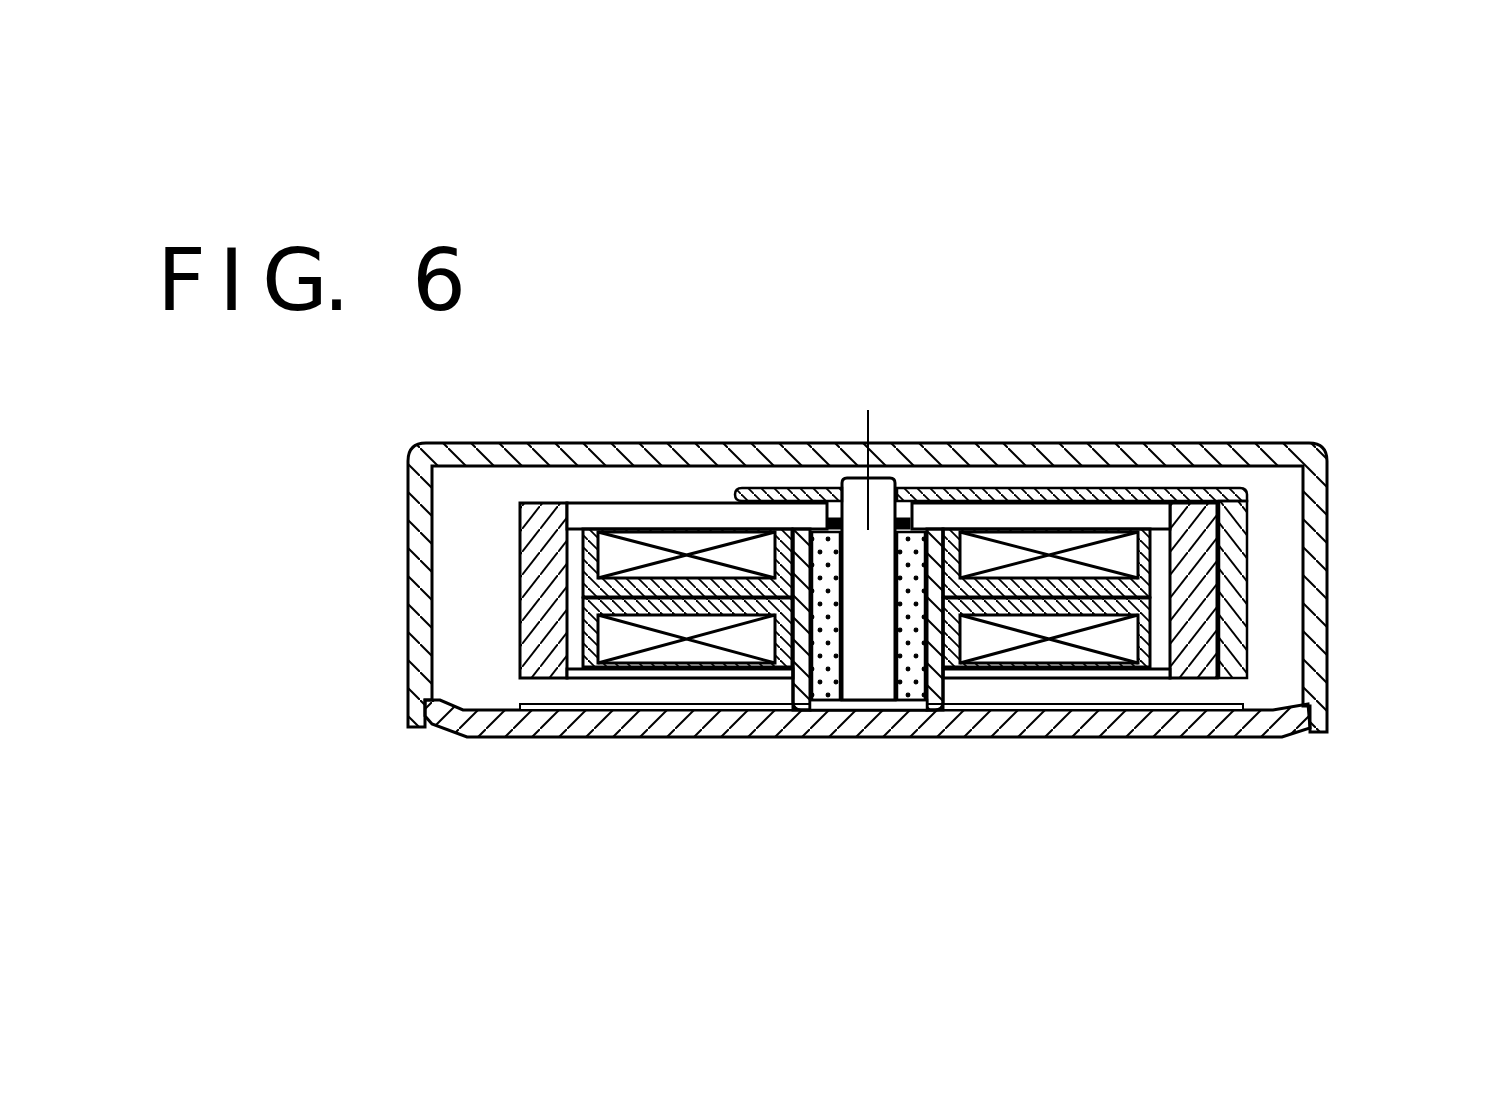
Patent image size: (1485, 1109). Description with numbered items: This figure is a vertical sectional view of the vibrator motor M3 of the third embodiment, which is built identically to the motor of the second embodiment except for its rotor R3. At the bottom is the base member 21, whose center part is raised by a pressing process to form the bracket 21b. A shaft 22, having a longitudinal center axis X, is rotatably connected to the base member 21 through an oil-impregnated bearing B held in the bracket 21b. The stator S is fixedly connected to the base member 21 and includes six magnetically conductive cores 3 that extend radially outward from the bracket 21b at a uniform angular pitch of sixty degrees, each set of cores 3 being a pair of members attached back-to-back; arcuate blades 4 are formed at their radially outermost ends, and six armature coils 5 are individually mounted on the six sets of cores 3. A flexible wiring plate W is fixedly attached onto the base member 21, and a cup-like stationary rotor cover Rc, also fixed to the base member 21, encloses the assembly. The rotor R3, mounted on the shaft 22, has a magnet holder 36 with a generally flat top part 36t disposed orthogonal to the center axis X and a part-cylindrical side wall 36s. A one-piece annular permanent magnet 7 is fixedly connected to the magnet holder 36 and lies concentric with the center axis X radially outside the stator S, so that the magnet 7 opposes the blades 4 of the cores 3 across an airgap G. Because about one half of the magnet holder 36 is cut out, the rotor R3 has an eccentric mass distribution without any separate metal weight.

The vibrator motor M3 is at (1113, 313).
The stationary rotor cover Rc is at (1248, 457).
The rotor R3 is at (1097, 584).
The magnet holder 36 is at (1097, 509).
The top part 36t is at (795, 487).
The side wall 36s is at (1230, 577).
The center axis X is at (870, 423).
The shaft 22 is at (880, 680).
The oil-impregnated bearing B is at (803, 627).
The bracket 21b is at (793, 700).
The base member 21 is at (1277, 727).
The flexible wiring plate W is at (1223, 712).
The stator S is at (880, 682).
The annular permanent magnet 7 is at (547, 570).
The airgap G is at (573, 628).
The arcuate blades 4 is at (607, 657).
The armature coils 5 is at (868, 693).
The cores 3 is at (747, 605).